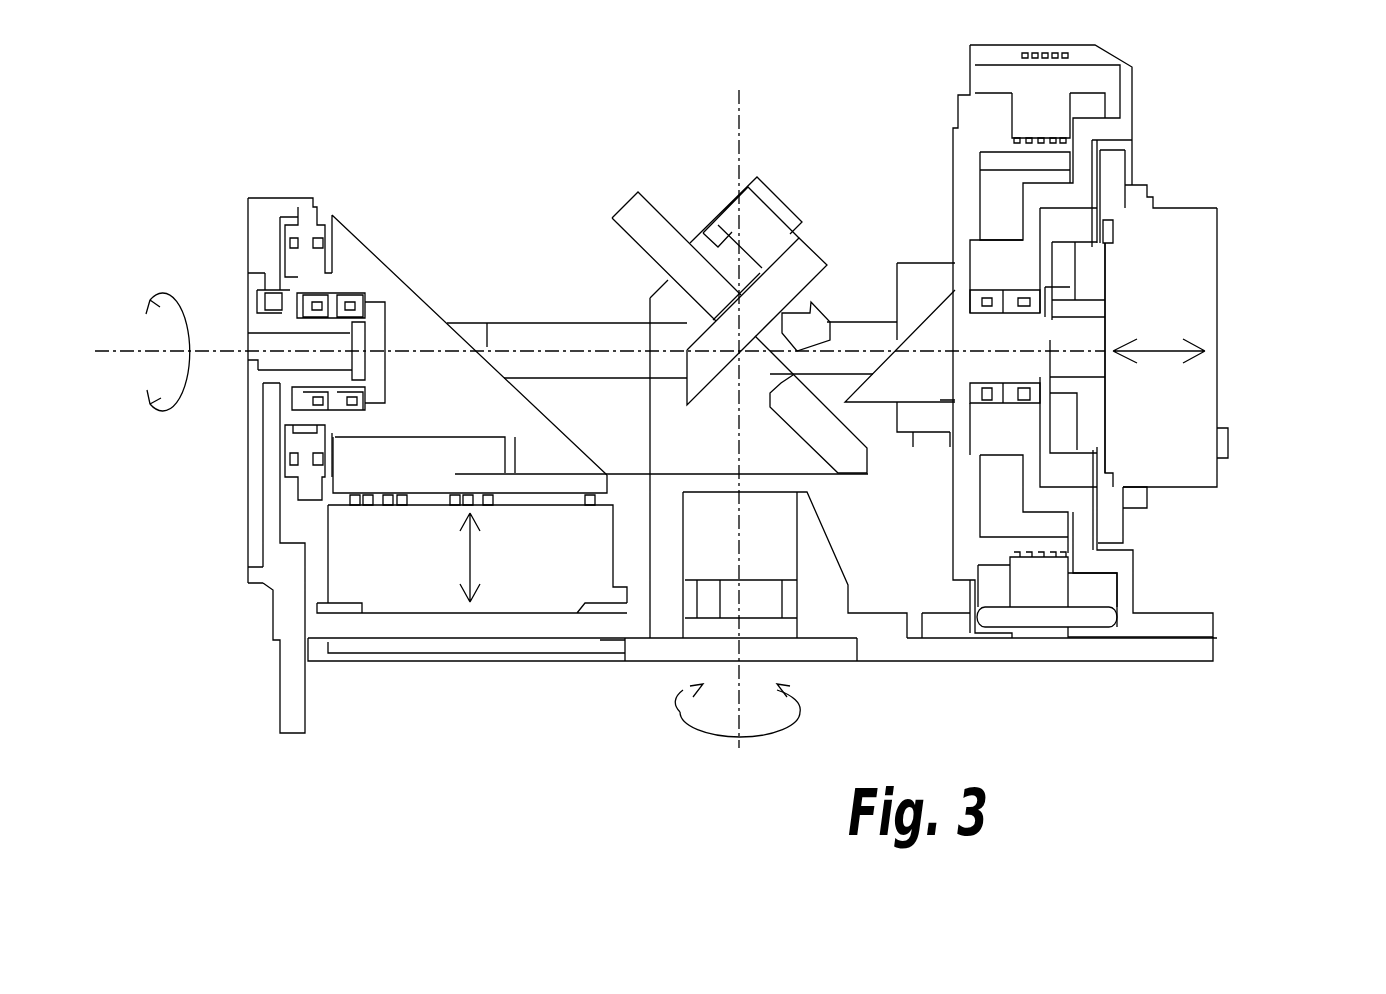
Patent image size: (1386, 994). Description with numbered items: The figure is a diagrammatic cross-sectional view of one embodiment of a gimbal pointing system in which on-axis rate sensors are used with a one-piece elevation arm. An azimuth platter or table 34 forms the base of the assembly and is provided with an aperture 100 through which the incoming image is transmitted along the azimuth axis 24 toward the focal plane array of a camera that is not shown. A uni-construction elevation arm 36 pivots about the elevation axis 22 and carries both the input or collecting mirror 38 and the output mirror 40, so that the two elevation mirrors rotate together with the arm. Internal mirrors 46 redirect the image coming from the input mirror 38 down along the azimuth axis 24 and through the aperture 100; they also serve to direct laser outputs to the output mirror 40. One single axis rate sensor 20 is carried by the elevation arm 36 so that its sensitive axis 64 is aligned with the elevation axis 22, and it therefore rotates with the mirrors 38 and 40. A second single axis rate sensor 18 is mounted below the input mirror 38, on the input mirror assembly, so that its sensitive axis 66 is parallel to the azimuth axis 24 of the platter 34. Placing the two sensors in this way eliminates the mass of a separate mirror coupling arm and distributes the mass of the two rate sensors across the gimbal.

The single axis rate sensor 18 is at (468, 552).
The single axis rate sensor 20 is at (1162, 350).
The elevation axis 22 is at (222, 352).
The azimuth axis 24 is at (740, 120).
The azimuth platter 34 is at (1213, 652).
The uni-construction elevation arm 36 is at (515, 320).
The input mirror 38 is at (397, 265).
The output mirror 40 is at (935, 313).
The internal mirrors 46 is at (813, 193).
The sensitive axis 64 is at (1172, 355).
The sensitive axis 66 is at (473, 565).
The aperture 100 is at (823, 645).